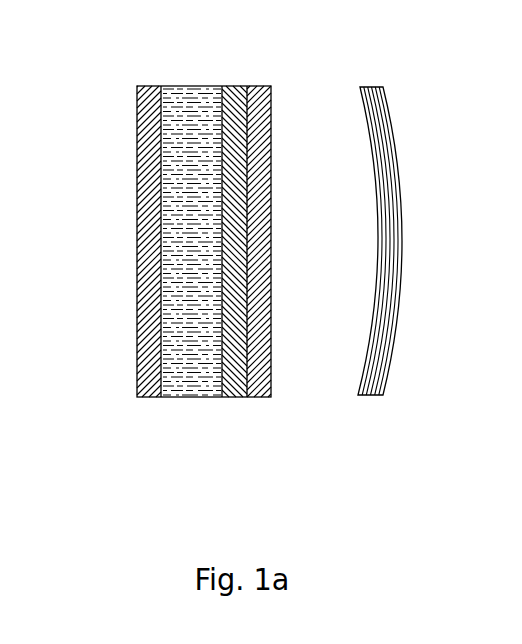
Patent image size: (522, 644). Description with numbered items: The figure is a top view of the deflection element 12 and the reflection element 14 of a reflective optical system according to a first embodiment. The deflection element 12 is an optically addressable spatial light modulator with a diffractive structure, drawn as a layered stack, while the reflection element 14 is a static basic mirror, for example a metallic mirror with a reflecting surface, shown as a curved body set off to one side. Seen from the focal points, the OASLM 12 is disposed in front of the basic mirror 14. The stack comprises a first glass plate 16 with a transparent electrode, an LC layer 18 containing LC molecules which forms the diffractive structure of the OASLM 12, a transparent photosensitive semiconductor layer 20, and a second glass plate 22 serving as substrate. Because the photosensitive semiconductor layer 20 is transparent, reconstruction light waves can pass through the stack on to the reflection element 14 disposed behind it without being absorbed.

The deflection element 12 is at (182, 267).
The reflection element 14 is at (372, 87).
The first glass plate 16 is at (147, 397).
The LC layer 18 is at (192, 397).
The photosensitive semiconductor layer 20 is at (233, 397).
The second glass plate 22 is at (257, 397).